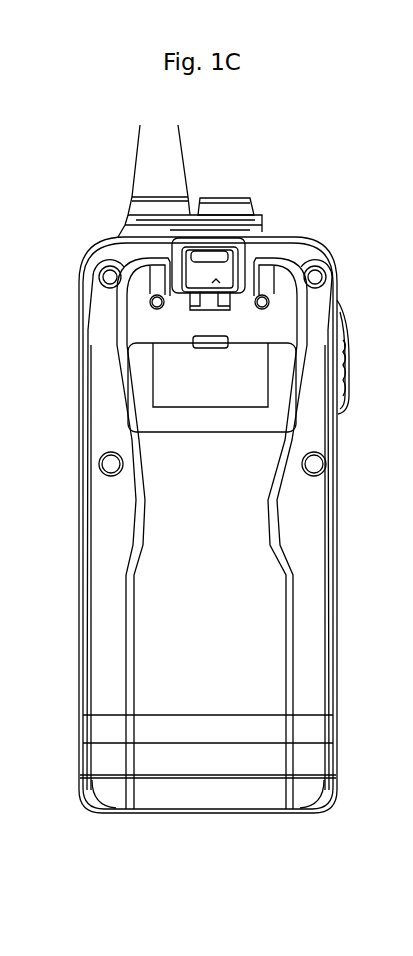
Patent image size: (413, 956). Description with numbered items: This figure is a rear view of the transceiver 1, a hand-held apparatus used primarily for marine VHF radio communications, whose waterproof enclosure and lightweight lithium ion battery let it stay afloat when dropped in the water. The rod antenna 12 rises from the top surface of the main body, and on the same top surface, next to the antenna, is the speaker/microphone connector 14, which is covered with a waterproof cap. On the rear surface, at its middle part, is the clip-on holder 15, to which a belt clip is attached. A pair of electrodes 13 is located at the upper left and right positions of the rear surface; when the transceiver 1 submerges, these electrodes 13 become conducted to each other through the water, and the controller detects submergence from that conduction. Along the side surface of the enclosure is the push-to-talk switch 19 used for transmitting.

The transceiver 1 is at (346, 221).
The rod antenna 12 is at (185, 170).
The electrodes 13 is at (154, 299).
The speaker/microphone connector 14 is at (243, 198).
The clip-on holder 15 is at (148, 428).
The push-to-talk switch 19 is at (348, 407).